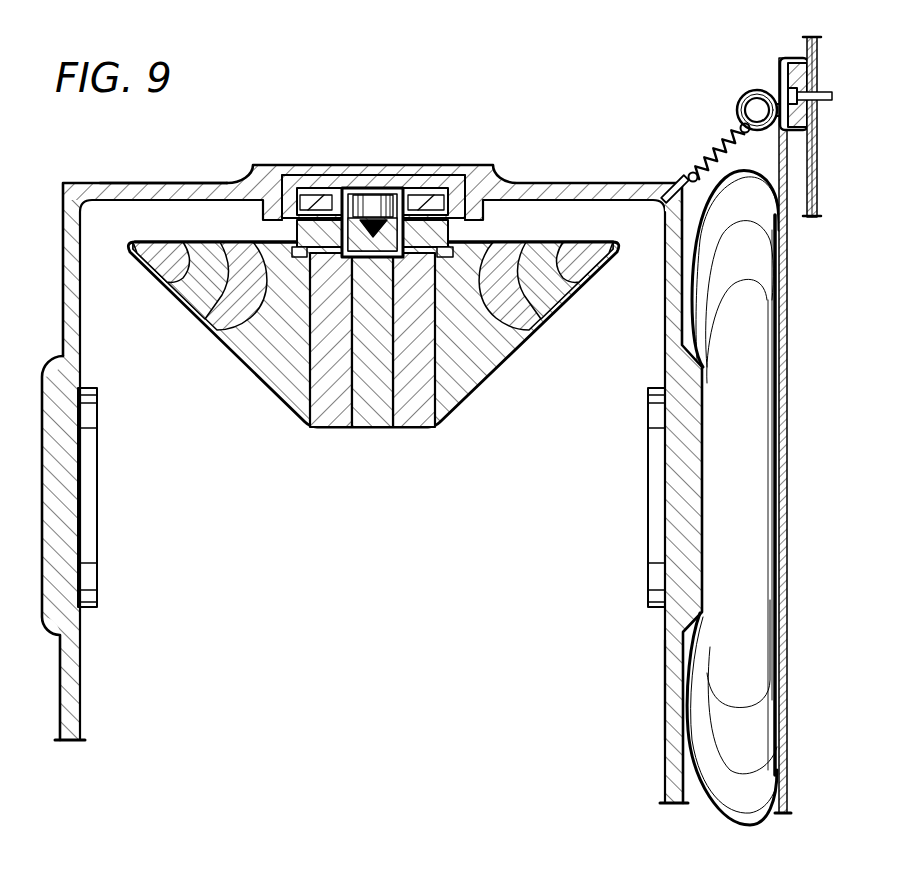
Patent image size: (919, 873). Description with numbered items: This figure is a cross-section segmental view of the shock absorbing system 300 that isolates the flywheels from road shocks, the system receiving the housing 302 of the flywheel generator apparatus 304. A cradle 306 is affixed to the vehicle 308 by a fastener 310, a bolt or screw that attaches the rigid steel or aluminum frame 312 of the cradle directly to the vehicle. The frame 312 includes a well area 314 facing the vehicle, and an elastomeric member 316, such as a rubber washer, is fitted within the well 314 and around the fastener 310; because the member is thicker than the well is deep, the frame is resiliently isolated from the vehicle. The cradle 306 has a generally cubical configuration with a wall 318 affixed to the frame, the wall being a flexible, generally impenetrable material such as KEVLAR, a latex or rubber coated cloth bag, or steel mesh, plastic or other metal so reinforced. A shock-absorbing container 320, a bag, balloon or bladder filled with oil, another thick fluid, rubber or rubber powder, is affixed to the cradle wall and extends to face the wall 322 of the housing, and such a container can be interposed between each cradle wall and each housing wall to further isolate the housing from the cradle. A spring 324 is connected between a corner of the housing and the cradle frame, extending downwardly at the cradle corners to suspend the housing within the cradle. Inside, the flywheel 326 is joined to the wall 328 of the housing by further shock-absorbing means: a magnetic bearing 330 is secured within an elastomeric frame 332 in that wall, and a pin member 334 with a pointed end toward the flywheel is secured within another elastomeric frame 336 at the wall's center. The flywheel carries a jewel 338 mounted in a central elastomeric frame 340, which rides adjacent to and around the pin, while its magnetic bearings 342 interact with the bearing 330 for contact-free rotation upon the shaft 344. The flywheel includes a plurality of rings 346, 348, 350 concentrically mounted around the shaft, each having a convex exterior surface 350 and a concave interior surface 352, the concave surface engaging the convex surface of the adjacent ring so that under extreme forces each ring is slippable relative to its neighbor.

The shock absorbing system 300 is at (797, 542).
The housing 302 is at (670, 755).
The flywheel generator apparatus 304 is at (518, 168).
The cradle 306 is at (787, 400).
The vehicle 308 is at (817, 52).
The fastener 310 is at (832, 98).
The frame 312 is at (813, 123).
The well area 314 is at (808, 52).
The elastomeric member 316 is at (817, 75).
The wall 318 is at (787, 460).
The shock-absorbing container 320 is at (763, 627).
The wall of the housing 322 is at (668, 698).
The spring 324 is at (700, 153).
The flywheel 326 is at (270, 363).
The wall of the housing 328 is at (172, 207).
The magnetic bearing 330 is at (322, 195).
The elastomeric frame 332 is at (306, 180).
The pin member 334 is at (372, 200).
The elastomeric frame 336 is at (417, 180).
The jewel 338 is at (373, 250).
The elastomeric frame 340 is at (400, 246).
The magnetic bearings 342 is at (300, 236).
The shaft 344 is at (378, 420).
The ring 346 is at (158, 262).
The ring 348 is at (183, 282).
The ring / convex exterior surface 350 is at (187, 250).
The concave interior surface 352 is at (243, 323).